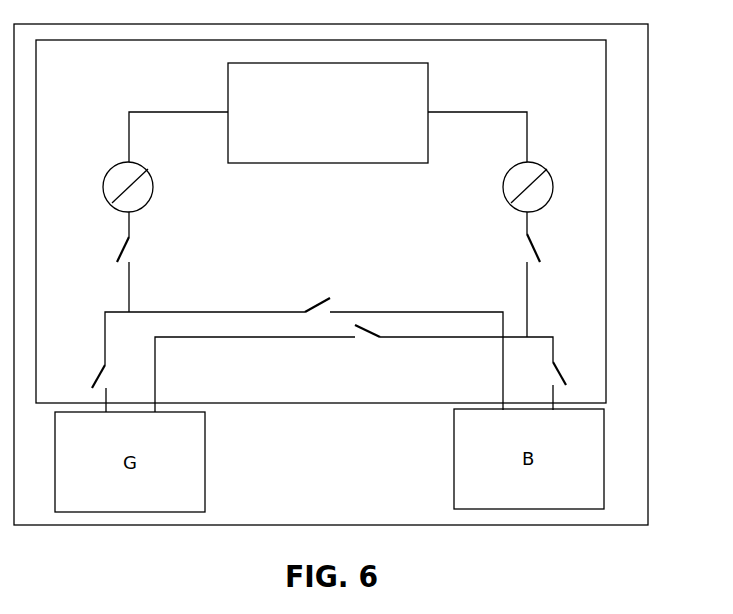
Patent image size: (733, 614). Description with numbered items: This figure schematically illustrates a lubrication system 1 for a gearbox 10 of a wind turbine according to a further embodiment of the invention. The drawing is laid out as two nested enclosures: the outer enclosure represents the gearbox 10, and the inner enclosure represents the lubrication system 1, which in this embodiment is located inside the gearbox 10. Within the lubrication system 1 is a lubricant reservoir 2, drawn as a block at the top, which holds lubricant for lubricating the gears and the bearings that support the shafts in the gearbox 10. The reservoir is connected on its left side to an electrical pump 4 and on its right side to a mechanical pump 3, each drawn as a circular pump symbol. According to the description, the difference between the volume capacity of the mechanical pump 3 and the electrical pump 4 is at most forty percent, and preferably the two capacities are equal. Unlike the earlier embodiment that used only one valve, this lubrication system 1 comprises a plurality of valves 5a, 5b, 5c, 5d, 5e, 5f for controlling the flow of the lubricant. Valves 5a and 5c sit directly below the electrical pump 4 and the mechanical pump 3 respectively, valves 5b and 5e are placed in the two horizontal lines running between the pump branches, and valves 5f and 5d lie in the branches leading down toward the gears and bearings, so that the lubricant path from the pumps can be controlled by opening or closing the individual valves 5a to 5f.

The lubrication system 1 is at (607, 101).
The lubricant reservoir 2 is at (410, 147).
The mechanical pump 3 is at (541, 191).
The electrical pump 4 is at (118, 177).
The valve 5a is at (113, 247).
The valve 5b is at (310, 300).
The valve 5c is at (543, 241).
The valve 5d is at (563, 367).
The valve 5e is at (366, 341).
The valve 5f is at (98, 371).
The gearbox 10 is at (649, 131).